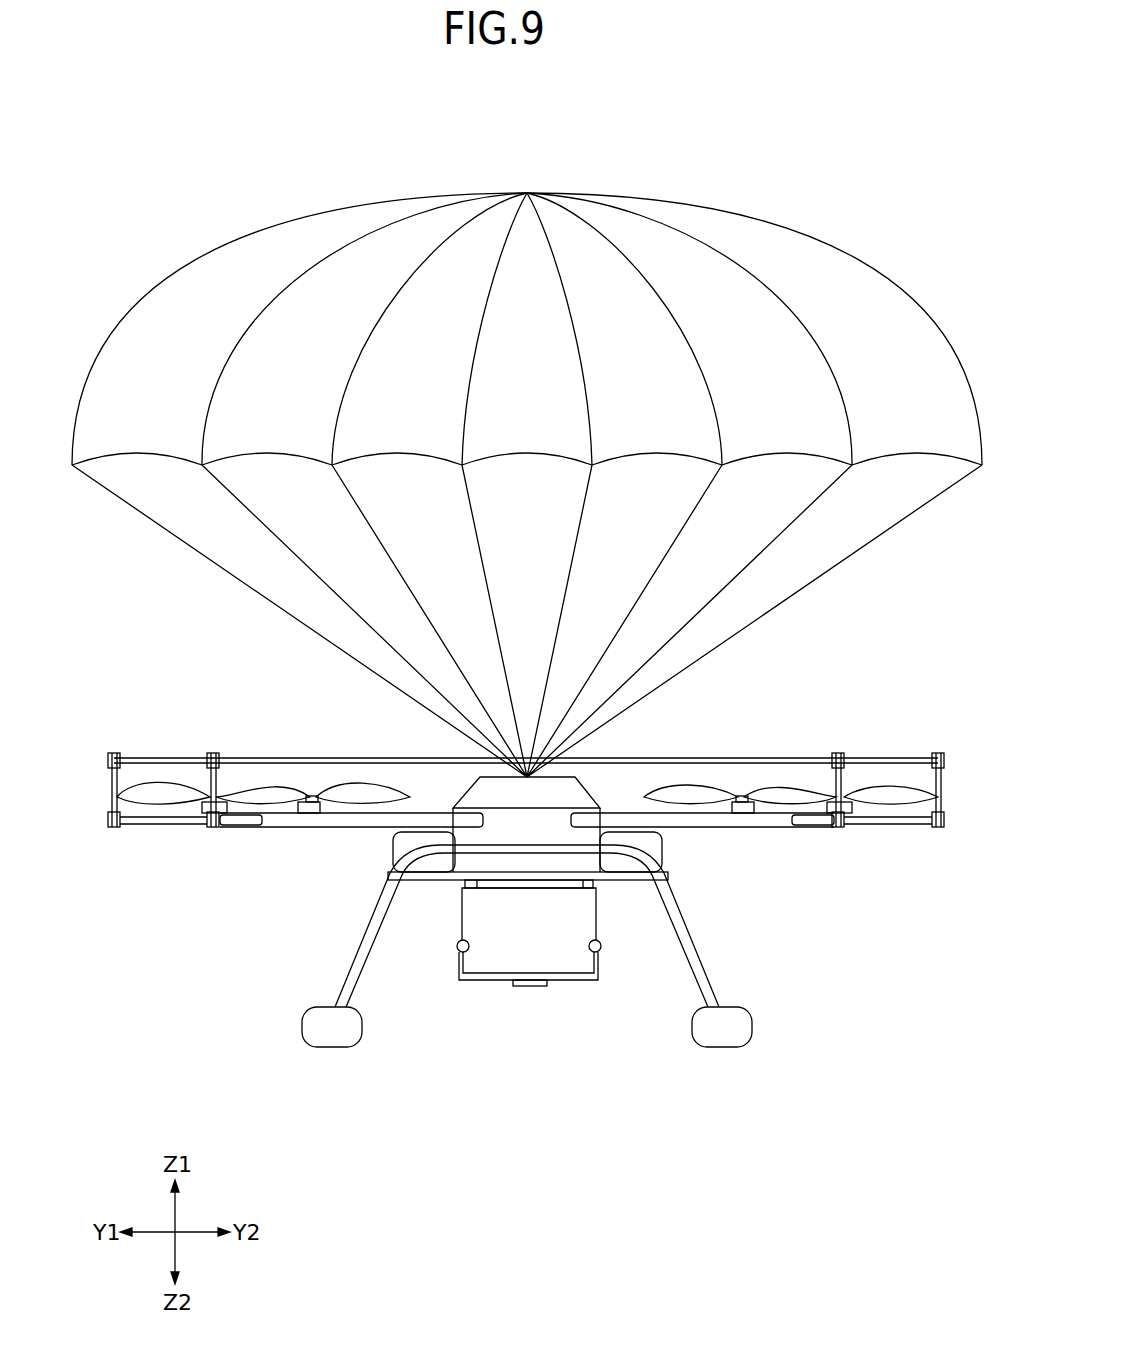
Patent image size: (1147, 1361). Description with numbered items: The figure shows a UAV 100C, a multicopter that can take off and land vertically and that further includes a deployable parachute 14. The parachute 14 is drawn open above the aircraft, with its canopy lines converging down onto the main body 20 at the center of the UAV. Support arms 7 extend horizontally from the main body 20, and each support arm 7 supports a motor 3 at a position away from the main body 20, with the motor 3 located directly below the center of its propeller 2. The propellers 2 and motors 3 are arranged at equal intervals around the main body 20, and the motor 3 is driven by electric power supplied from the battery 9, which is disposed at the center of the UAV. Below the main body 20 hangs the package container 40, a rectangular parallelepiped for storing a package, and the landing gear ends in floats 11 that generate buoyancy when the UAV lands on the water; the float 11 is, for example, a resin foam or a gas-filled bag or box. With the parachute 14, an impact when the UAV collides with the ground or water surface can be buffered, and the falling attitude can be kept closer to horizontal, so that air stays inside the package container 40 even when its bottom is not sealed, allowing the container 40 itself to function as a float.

The UAV 100C is at (828, 213).
The parachute 14 is at (736, 230).
The propeller 2 is at (176, 790).
The motor 3 is at (317, 804).
The support arm 7 is at (622, 817).
The battery 9 is at (412, 850).
The float 11 is at (312, 1028).
The main body 20 is at (472, 780).
The package container 40 is at (490, 985).